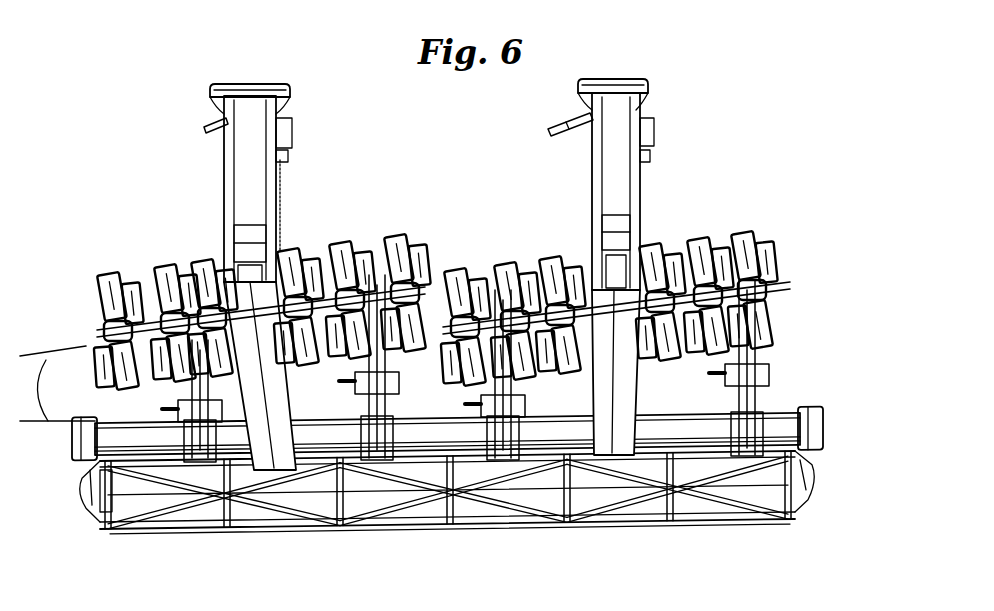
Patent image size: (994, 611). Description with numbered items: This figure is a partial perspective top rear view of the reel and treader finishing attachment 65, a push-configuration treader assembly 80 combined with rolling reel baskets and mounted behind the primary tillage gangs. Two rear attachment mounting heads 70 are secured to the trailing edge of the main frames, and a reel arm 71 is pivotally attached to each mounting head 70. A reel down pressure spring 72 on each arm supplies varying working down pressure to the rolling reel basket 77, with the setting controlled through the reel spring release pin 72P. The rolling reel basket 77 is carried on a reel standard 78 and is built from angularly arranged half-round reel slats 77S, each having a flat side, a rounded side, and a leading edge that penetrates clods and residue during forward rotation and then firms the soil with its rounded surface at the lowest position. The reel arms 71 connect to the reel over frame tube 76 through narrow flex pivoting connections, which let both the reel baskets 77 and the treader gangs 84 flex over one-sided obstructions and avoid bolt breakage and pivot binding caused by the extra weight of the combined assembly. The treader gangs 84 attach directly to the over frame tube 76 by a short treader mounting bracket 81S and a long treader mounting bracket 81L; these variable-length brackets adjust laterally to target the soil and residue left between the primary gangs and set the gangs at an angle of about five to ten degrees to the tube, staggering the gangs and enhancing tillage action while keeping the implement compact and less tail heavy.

The reel and treader finishing attachment 65 is at (126, 116).
The rear attachment mounting head 70 is at (276, 103).
The reel arm 71 is at (642, 372).
The reel down pressure spring 72 is at (280, 205).
The reel spring release pin 72P is at (548, 132).
The reel over frame tube 76 is at (433, 432).
The rolling reel basket 77 is at (798, 503).
The reel slat 77S is at (510, 483).
The reel standard 78 is at (85, 483).
The treader assembly 80 is at (767, 208).
The treader mounting bracket short 81S is at (540, 414).
The treader mounting bracket long 81L is at (777, 393).
The treader gang 84 is at (165, 280).